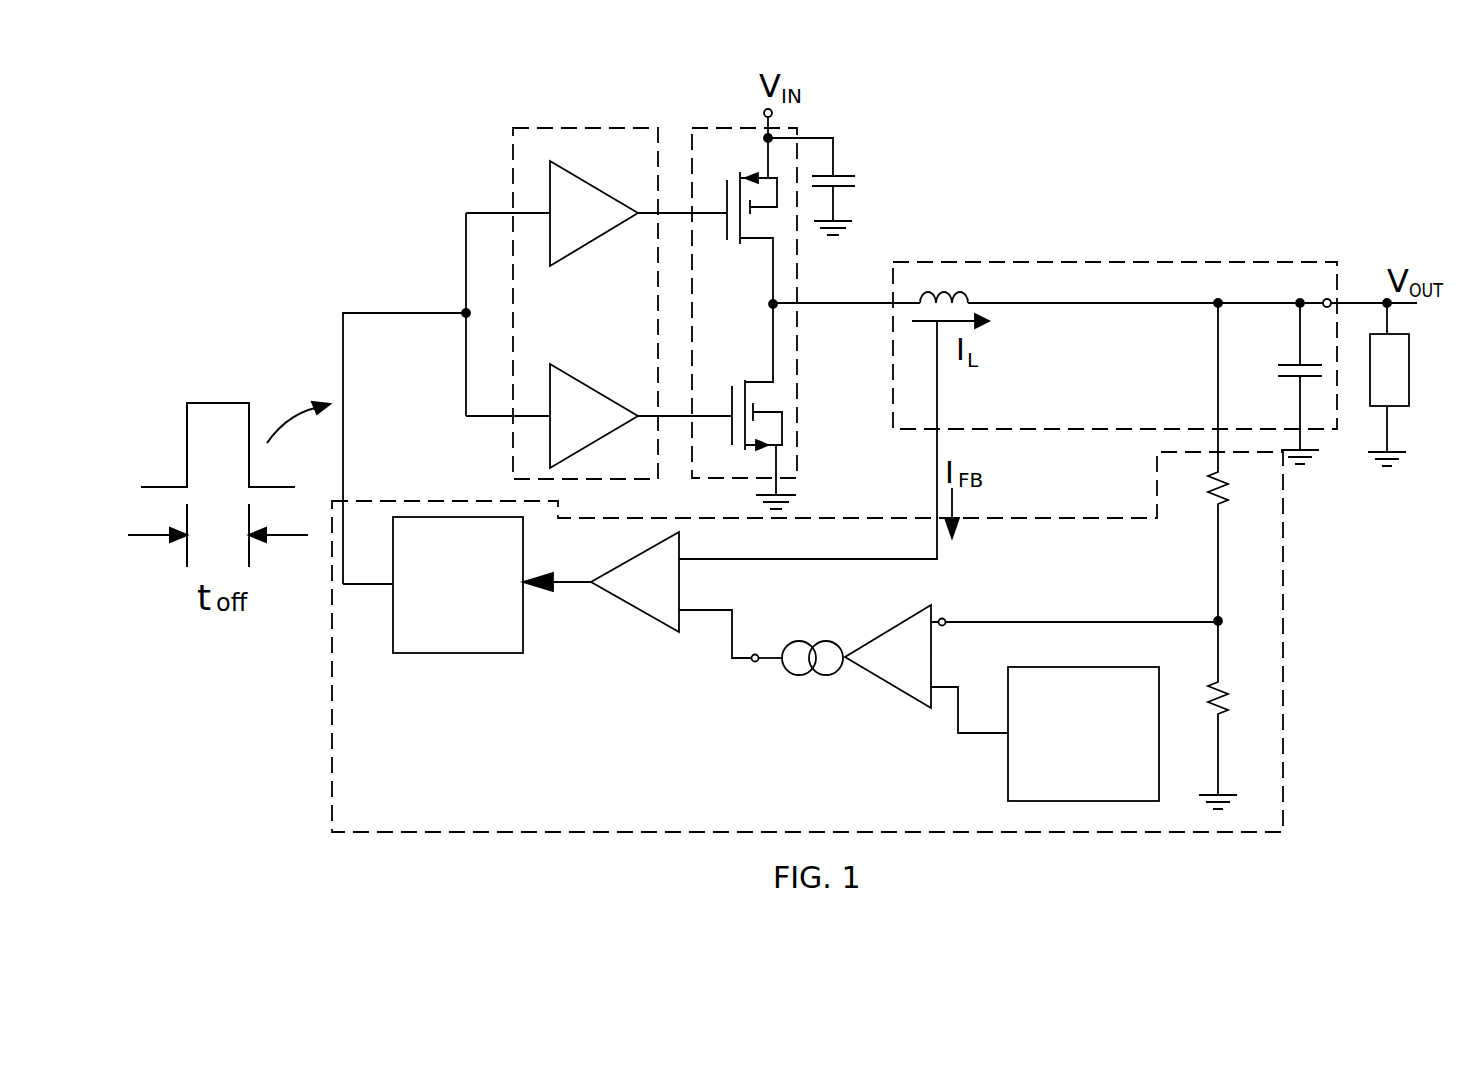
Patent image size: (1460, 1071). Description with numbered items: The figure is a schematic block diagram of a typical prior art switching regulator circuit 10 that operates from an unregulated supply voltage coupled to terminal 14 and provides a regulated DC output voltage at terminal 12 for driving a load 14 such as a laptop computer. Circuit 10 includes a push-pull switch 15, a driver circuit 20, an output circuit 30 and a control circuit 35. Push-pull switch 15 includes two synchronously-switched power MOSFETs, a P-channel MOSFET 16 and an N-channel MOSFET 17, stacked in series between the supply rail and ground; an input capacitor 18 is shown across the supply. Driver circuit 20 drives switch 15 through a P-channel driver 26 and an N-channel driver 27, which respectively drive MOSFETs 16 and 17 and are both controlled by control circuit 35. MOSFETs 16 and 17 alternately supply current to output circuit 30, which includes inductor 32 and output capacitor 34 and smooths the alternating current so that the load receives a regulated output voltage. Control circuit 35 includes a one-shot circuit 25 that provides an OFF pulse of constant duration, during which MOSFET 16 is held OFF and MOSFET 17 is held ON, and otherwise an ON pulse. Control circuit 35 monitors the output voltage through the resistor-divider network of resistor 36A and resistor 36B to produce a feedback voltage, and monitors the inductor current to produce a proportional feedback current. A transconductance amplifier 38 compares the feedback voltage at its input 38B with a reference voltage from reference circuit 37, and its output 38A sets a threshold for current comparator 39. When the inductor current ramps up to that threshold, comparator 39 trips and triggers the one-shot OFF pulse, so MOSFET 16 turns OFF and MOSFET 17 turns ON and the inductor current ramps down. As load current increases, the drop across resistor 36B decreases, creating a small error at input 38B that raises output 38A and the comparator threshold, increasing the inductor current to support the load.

The switching regulator circuit 10 is at (527, 100).
The output terminal 12 is at (1330, 298).
The load / input terminal 14 is at (773, 113).
The push-pull switch 15 is at (733, 127).
The P-channel MOSFET 16 is at (757, 246).
The N-channel MOSFET 17 is at (750, 447).
The input capacitor CIN 18 is at (840, 176).
The driver circuit 20 is at (548, 128).
The one-shot circuit 25 is at (475, 653).
The P-channel driver 26 is at (577, 253).
The N-channel driver 27 is at (597, 386).
The output circuit 30 is at (1063, 262).
The inductor 32 is at (968, 300).
The output capacitor 34 is at (1290, 365).
The control circuit 35 is at (1283, 645).
The resistor R1 36A is at (1222, 505).
The resistor R2 36B is at (1225, 716).
The reference circuit 37 is at (1100, 667).
The transconductance amplifier 38 is at (985, 660).
The output of transconductance amplifier 38A is at (756, 652).
The input of transconductance amplifier 38B is at (942, 617).
The current comparator 39 is at (648, 615).